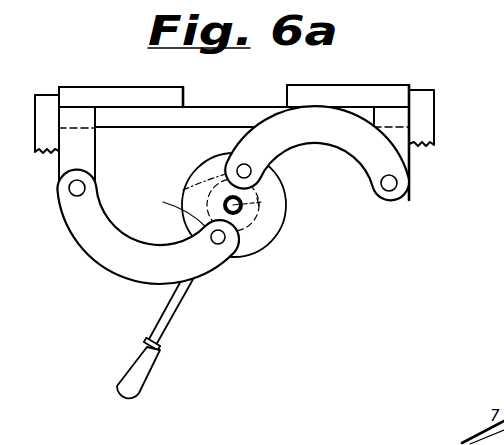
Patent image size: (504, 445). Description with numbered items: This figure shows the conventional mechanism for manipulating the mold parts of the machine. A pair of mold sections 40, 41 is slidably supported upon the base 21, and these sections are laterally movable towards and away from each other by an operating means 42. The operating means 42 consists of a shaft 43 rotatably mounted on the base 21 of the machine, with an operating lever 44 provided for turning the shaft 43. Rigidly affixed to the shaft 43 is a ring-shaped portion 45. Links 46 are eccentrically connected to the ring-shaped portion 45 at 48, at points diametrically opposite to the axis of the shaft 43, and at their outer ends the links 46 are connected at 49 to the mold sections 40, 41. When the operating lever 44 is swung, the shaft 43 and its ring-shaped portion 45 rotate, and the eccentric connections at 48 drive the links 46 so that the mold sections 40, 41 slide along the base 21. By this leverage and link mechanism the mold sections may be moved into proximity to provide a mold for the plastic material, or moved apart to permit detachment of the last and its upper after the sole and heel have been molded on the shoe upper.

The base 21 is at (122, 127).
The mold section 40 is at (176, 89).
The mold section 41 is at (305, 91).
The operating means 42 is at (250, 259).
The shaft 43 is at (308, 189).
The operating lever 44 is at (170, 323).
The ring-shaped portion 45 is at (278, 229).
The link 46 is at (315, 141).
The eccentric connection 48 is at (183, 190).
The link connection 49 is at (62, 201).